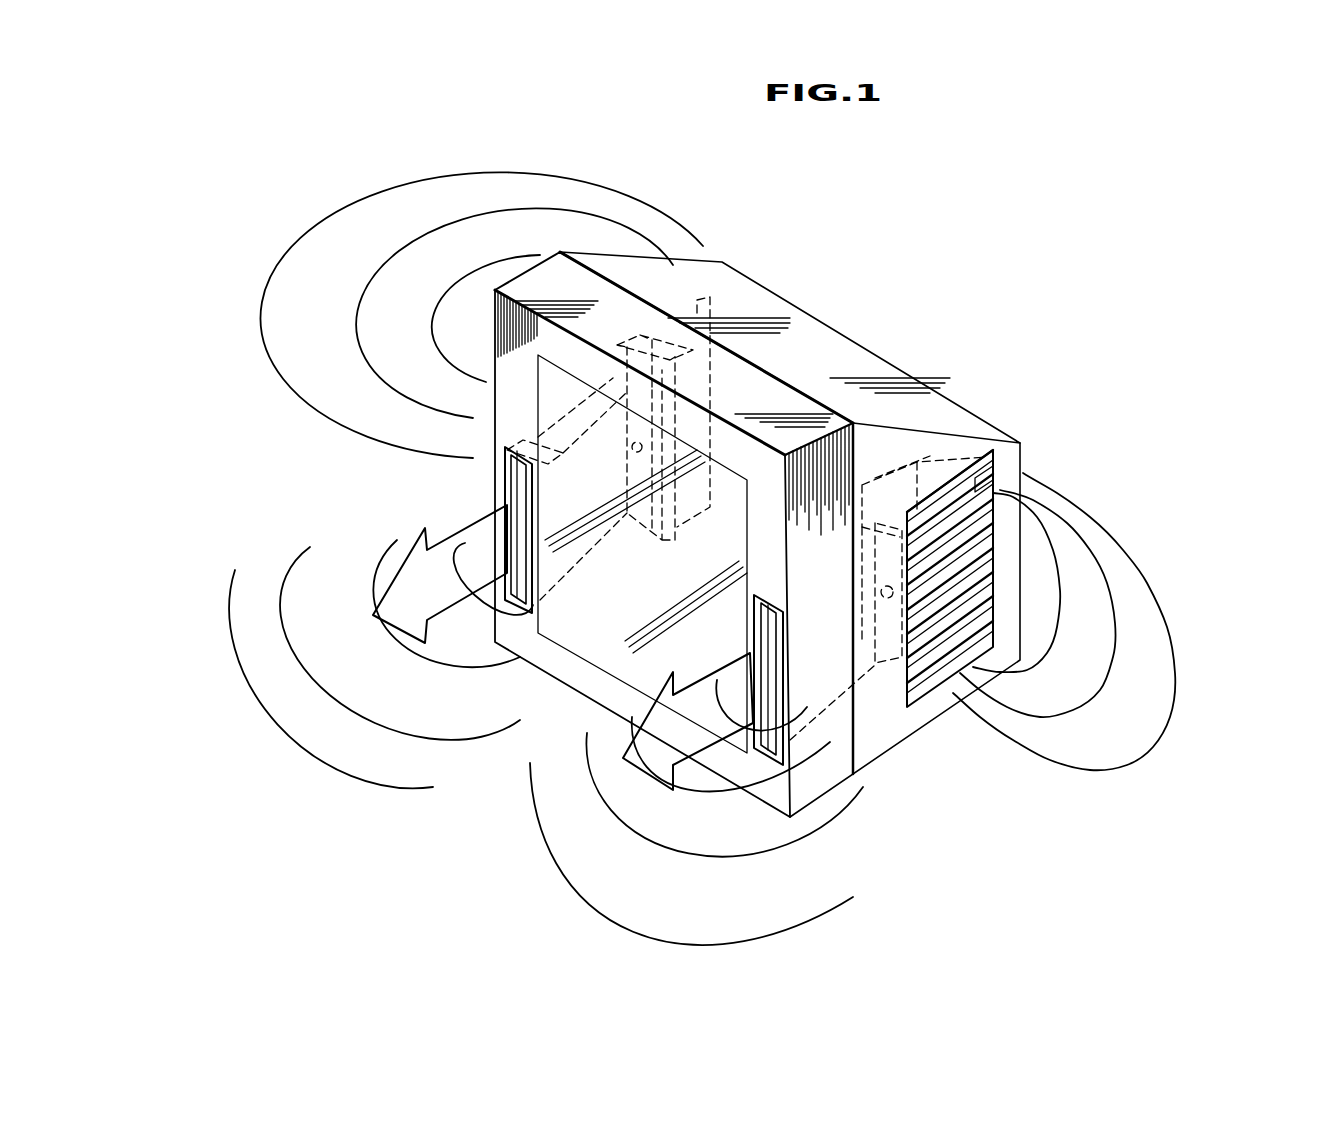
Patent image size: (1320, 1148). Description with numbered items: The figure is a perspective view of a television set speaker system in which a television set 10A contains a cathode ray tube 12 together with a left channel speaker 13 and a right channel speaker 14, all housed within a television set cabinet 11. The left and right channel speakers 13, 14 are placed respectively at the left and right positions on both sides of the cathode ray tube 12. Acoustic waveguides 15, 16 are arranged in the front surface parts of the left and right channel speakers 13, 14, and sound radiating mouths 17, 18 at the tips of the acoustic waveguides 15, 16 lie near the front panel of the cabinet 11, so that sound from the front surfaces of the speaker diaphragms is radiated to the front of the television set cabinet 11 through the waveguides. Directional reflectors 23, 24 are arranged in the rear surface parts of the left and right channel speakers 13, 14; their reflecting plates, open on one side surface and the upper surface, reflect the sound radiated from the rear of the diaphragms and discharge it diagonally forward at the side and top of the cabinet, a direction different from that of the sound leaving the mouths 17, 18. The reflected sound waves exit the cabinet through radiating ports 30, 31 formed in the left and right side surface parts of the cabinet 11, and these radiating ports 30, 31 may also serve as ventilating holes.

The television set 10A is at (820, 256).
The television set cabinet 11 is at (873, 738).
The cathode ray tube 12 is at (580, 637).
The left channel speaker 13 is at (643, 540).
The right channel speaker 14 is at (888, 655).
The acoustic waveguide 15 is at (540, 462).
The acoustic waveguide 16 is at (823, 706).
The sound radiating mouth 17 is at (507, 518).
The sound radiating mouth 18 is at (787, 765).
The directional reflector 23 is at (708, 378).
The directional reflector 24 is at (943, 467).
The radiating port 30 is at (657, 342).
The radiating port 31 is at (985, 487).